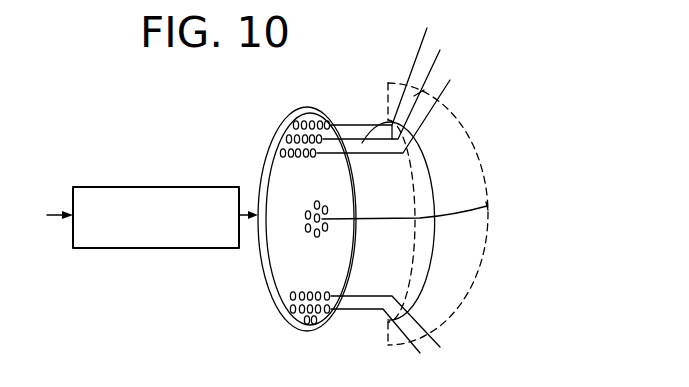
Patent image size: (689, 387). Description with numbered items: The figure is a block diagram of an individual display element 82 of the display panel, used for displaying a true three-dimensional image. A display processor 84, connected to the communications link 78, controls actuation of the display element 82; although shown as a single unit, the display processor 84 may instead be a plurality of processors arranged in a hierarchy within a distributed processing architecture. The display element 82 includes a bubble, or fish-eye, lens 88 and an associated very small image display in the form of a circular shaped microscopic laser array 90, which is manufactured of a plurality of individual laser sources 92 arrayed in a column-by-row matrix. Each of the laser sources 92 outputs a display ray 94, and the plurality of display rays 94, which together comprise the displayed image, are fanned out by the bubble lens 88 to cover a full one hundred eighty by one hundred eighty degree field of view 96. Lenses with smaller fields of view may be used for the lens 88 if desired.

The communications link 78 is at (62, 215).
The display element 82 is at (181, 104).
The display processor 84 is at (136, 187).
The bubble lens 88 is at (353, 202).
The microscopic laser array 90 is at (283, 124).
The laser sources 92 is at (301, 117).
The display ray 94 is at (414, 58).
The field of view 96 is at (483, 130).